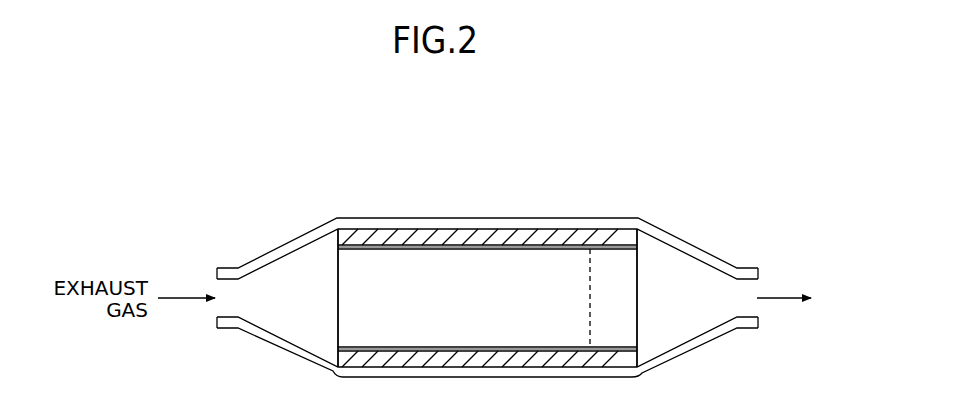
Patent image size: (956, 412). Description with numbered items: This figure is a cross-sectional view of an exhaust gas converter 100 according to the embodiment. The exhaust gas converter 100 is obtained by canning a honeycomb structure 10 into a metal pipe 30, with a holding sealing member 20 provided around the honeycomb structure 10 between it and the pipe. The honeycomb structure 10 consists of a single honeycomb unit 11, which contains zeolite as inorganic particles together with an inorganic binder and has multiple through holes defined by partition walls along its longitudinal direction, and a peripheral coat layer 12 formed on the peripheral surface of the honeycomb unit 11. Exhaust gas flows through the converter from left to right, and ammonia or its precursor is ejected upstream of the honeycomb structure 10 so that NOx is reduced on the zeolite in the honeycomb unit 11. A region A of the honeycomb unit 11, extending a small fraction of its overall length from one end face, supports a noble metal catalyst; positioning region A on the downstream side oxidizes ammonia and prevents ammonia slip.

The exhaust gas converter 100 is at (682, 139).
The honeycomb structure 10 is at (315, 150).
The honeycomb unit 11 is at (354, 236).
The peripheral coat layer 12 is at (400, 247).
The holding sealing member 20 is at (428, 230).
The metal pipe 30 is at (500, 224).
The region A is at (622, 282).